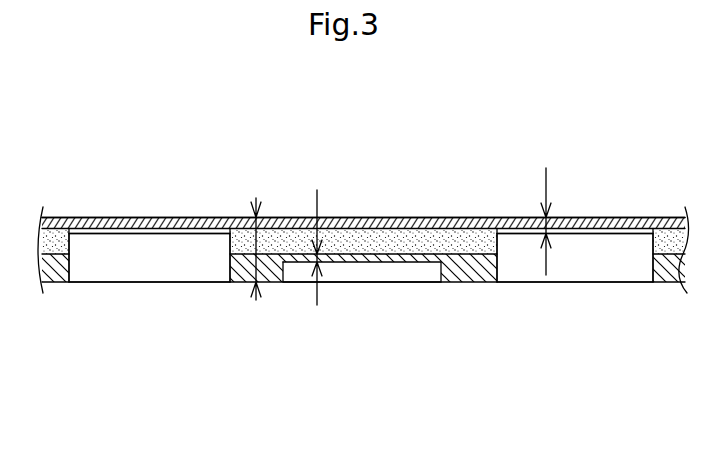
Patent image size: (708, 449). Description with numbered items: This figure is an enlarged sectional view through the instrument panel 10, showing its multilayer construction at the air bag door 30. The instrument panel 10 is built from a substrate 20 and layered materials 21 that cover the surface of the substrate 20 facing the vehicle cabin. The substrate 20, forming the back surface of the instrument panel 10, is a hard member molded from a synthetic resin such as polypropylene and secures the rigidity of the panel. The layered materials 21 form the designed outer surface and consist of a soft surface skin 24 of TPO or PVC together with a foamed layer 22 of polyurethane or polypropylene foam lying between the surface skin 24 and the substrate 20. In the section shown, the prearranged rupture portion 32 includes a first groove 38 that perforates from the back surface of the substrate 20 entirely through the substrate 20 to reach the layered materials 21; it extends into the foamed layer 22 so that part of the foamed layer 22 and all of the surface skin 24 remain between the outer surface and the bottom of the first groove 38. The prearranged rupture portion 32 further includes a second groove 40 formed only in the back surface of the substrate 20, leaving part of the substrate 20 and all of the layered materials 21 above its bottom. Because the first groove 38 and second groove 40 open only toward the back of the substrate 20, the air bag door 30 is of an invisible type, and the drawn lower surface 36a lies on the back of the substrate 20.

The instrument panel 10 is at (648, 217).
The substrate 20 is at (467, 278).
The layered materials 21 is at (363, 153).
The foamed layer 22 is at (402, 243).
The surface skin 24 is at (348, 218).
The air bag door 30 is at (437, 217).
The prearranged rupture portion 32 is at (413, 283).
The lower surface 36a is at (519, 283).
The first groove 38 is at (180, 234).
The second groove 40 is at (362, 282).